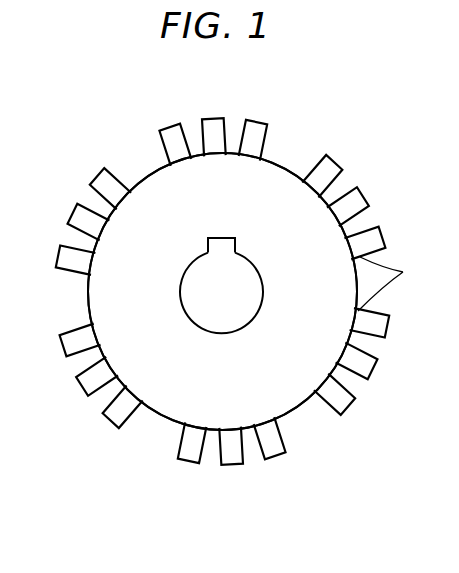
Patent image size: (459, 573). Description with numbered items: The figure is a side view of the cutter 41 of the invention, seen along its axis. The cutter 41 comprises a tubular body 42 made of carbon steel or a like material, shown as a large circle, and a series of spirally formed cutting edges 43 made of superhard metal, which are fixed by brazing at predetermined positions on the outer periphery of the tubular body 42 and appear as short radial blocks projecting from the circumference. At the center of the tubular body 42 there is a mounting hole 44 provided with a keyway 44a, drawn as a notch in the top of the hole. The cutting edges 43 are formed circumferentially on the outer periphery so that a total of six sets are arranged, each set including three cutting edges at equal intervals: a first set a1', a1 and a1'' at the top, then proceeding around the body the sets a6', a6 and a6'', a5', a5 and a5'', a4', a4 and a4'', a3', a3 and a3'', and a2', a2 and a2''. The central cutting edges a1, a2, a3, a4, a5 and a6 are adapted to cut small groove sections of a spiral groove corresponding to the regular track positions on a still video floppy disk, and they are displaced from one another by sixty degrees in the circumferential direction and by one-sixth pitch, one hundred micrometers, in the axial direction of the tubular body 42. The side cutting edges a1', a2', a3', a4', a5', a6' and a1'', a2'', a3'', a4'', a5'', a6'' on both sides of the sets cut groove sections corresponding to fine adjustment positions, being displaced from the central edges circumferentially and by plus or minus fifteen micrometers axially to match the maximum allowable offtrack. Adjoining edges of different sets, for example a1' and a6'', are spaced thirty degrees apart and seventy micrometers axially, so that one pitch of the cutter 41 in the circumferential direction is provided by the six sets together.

The cutter 41 is at (272, 165).
The tubular body 42 is at (167, 410).
The cutting edges 43 is at (395, 284).
The mounting hole 44 is at (260, 293).
The keyway 44a is at (220, 238).
The central cutting edge a1 is at (212, 111).
The side cutting edge a1' is at (255, 115).
The side cutting edge a1'' is at (168, 120).
The central cutting edge a2 is at (73, 207).
The side cutting edge a2' is at (99, 168).
The side cutting edge a2'' is at (56, 248).
The central cutting edge a3 is at (82, 388).
The side cutting edge a3' is at (64, 351).
The side cutting edge a3'' is at (113, 426).
The central cutting edge a4 is at (234, 470).
The side cutting edge a4' is at (190, 467).
The side cutting edge a4'' is at (274, 465).
The central cutting edge a5 is at (373, 376).
The side cutting edge a5' is at (341, 417).
The side cutting edge a5'' is at (388, 330).
The central cutting edge a6 is at (366, 191).
The side cutting edge a6' is at (383, 233).
The side cutting edge a6'' is at (335, 158).